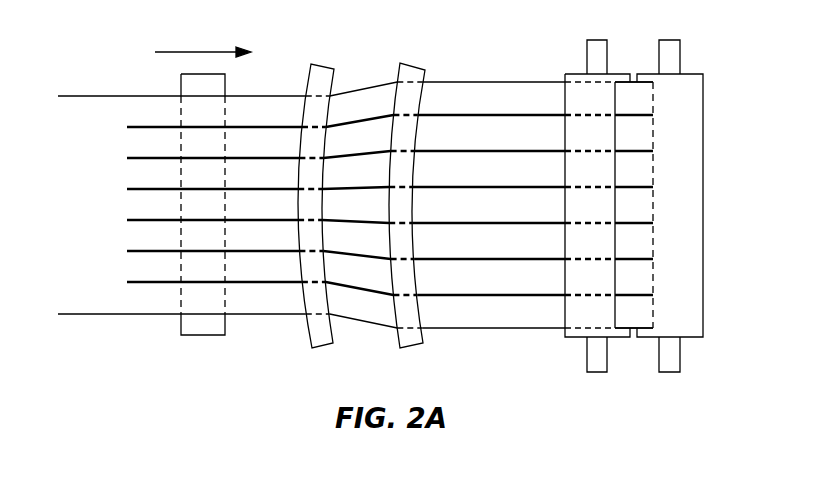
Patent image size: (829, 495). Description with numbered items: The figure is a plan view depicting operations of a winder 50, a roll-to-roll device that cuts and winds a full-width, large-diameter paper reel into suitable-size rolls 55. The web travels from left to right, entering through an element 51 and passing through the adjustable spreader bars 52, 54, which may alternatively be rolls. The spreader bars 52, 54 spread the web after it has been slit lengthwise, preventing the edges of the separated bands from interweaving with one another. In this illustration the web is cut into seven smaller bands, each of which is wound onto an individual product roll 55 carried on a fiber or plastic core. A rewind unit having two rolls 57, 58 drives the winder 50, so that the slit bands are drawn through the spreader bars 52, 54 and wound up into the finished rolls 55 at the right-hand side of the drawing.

The winder 50 is at (122, 339).
The input aperture / window 51 is at (217, 337).
The adjustable spreader bar 52 is at (325, 63).
The adjustable spreader bar 54 is at (413, 63).
The rolls 55 is at (653, 215).
The roll of rewind unit 57 is at (573, 337).
The roll of rewind unit 58 is at (685, 82).